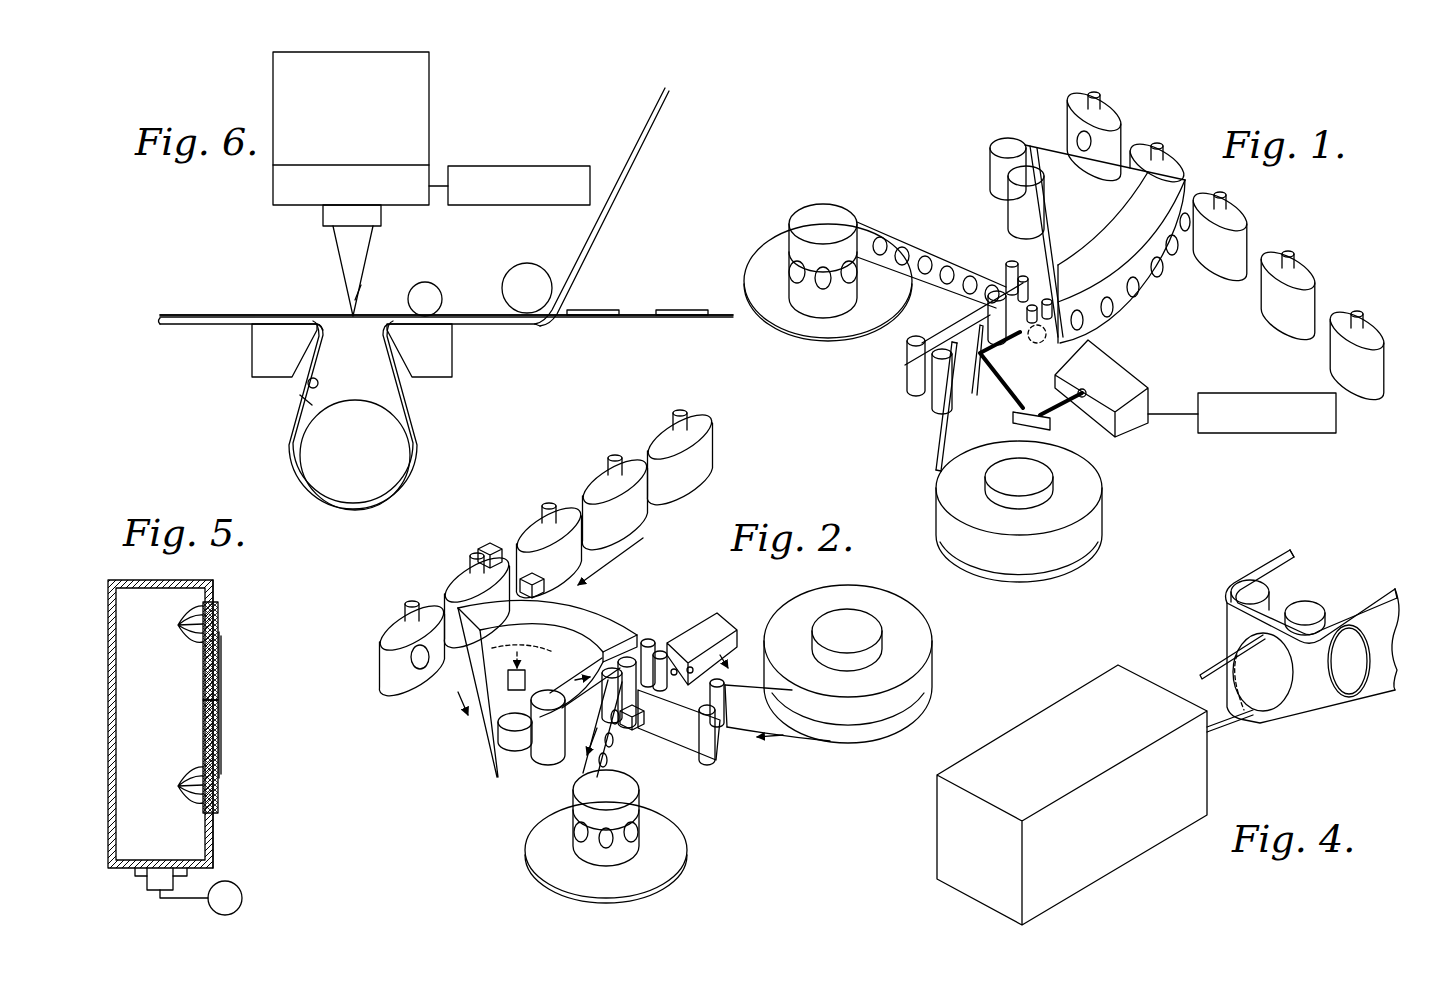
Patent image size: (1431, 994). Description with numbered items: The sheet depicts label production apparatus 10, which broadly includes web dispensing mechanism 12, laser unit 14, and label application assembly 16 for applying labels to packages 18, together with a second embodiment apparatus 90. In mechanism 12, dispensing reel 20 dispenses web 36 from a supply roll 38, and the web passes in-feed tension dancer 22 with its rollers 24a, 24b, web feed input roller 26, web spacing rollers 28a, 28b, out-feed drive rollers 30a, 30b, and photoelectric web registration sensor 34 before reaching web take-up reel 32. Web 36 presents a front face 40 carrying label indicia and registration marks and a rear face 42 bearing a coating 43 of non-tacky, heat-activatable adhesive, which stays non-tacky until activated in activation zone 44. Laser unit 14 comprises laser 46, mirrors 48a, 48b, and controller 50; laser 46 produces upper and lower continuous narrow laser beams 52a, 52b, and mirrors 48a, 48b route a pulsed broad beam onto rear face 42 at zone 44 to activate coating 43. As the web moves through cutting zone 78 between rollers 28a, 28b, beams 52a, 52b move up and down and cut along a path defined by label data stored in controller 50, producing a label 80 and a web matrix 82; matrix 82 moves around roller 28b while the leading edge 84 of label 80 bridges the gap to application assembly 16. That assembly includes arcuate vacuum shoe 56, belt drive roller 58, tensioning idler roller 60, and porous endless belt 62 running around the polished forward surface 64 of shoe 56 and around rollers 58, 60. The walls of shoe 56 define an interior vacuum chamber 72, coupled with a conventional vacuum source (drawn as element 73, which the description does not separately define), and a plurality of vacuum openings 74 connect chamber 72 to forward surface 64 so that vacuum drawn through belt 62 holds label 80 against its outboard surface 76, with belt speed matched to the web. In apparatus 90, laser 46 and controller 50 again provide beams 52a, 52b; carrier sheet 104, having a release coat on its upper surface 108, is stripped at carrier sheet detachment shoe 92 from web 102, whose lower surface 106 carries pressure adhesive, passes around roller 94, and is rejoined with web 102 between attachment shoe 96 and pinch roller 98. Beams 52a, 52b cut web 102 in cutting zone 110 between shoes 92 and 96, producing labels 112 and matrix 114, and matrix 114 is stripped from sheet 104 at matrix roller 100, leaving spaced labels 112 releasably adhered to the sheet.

In FIG. 1, the label production apparatus 10 is at (1339, 257).
In FIG. 1, the web dispensing mechanism 12 is at (839, 417).
In FIG. 1, the laser unit 14 is at (1190, 380).
In FIG. 1, the label application assembly 16 is at (927, 123).
In FIG. 1, the packages 18 is at (1107, 111).
In FIG. 2, the packages 18 is at (558, 515).
In FIG. 1, the dispensing reel 20 is at (1019, 486).
In FIG. 2, the dispensing reel 20 is at (860, 628).
In FIG. 1, the in-feed tension dancer 22 is at (911, 407).
In FIG. 1, the roller 24a is at (908, 338).
In FIG. 1, the roller 24b is at (941, 359).
In FIG. 1, the web feed input roller 26 is at (980, 319).
In FIG. 4, the web spacing roller 28a is at (1242, 593).
In FIG. 4, the web spacing roller 28b is at (1310, 612).
In FIG. 1, the out-feed drive roller 30a is at (1013, 262).
In FIG. 1, the out-feed drive roller 30b is at (1046, 248).
In FIG. 1, the web take-up reel 32 is at (811, 220).
In FIG. 2, the web take-up reel 32 is at (618, 787).
In FIG. 2, the photoelectric web registration sensor 34 is at (633, 727).
In FIG. 1, the web 36 is at (948, 440).
In FIG. 2, the web 36 is at (731, 725).
In FIG. 4, the web 36 is at (1285, 545).
In FIG. 1, the roll 38 is at (1080, 548).
In FIG. 2, the roll 38 is at (917, 642).
In FIG. 1, the front face 40 is at (938, 470).
In FIG. 2, the front face 40 is at (808, 724).
In FIG. 1, the rear face 42 is at (957, 428).
In FIG. 4, the rear face 42 is at (1280, 572).
In FIG. 1, the coating 43 is at (952, 400).
In FIG. 4, the coating 43 is at (1333, 712).
In FIG. 1, the activation zone 44 is at (1019, 349).
In FIG. 6, the laser 46 is at (406, 113).
In FIG. 1, the laser 46 is at (1112, 375).
In FIG. 2, the laser 46 is at (697, 625).
In FIG. 4, the laser 46 is at (1062, 712).
In FIG. 1, the mirror 48a is at (1070, 424).
In FIG. 1, the mirror 48b is at (978, 396).
In FIG. 6, the controller 50 is at (505, 166).
In FIG. 1, the controller 50 is at (1209, 433).
In FIG. 6, the upper laser beam 52a is at (343, 262).
In FIG. 4, the upper laser beam 52a is at (1194, 678).
In FIG. 6, the lower laser beam 52b is at (368, 276).
In FIG. 4, the lower laser beam 52b is at (1215, 735).
In FIG. 5, the arcuate vacuum shoe 56 is at (200, 580).
In FIG. 1, the arcuate vacuum shoe 56 is at (1147, 213).
In FIG. 2, the arcuate vacuum shoe 56 is at (602, 627).
In FIG. 1, the belt drive roller 58 is at (1003, 143).
In FIG. 2, the belt drive roller 58 is at (506, 722).
In FIG. 1, the tensioning idler roller 60 is at (1017, 213).
In FIG. 2, the tensioning idler roller 60 is at (543, 740).
In FIG. 5, the porous endless belt 62 is at (220, 620).
In FIG. 1, the porous endless belt 62 is at (1040, 160).
In FIG. 2, the porous endless belt 62 is at (472, 667).
In FIG. 5, the forward surface 64 is at (215, 835).
In FIG. 5, the interior vacuum chamber 72 is at (159, 724).
In FIG. 5, the voltmeter 73 is at (242, 895).
In FIG. 5, the vacuum openings 74 is at (177, 704).
In FIG. 5, the outboard surface 76 is at (220, 790).
In FIG. 4, the cutting zone 78 is at (1252, 728).
In FIG. 5, the label 80 is at (222, 705).
In FIG. 1, the label 80 is at (1084, 141).
In FIG. 2, the label 80 is at (420, 668).
In FIG. 4, the label 80 is at (1273, 668).
In FIG. 1, the web matrix 82 is at (899, 234).
In FIG. 2, the web matrix 82 is at (610, 712).
In FIG. 4, the web matrix 82 is at (1396, 575).
In FIG. 4, the leading edge 84 is at (1273, 693).
In FIG. 6, the apparatus 90 is at (219, 246).
In FIG. 6, the carrier sheet detachment shoe 92 is at (262, 343).
In FIG. 6, the roller 94 is at (313, 457).
In FIG. 6, the attachment shoe 96 is at (440, 352).
In FIG. 6, the pinch roller 98 is at (430, 283).
In FIG. 6, the matrix roller 100 is at (530, 276).
In FIG. 6, the web 102 is at (226, 315).
In FIG. 6, the carrier sheet 104 is at (172, 325).
In FIG. 6, the lower surface 106 is at (322, 316).
In FIG. 6, the upper surface 108 is at (307, 403).
In FIG. 6, the cutting zone 110 is at (366, 330).
In FIG. 6, the labels 112 is at (596, 310).
In FIG. 6, the matrix 114 is at (610, 217).